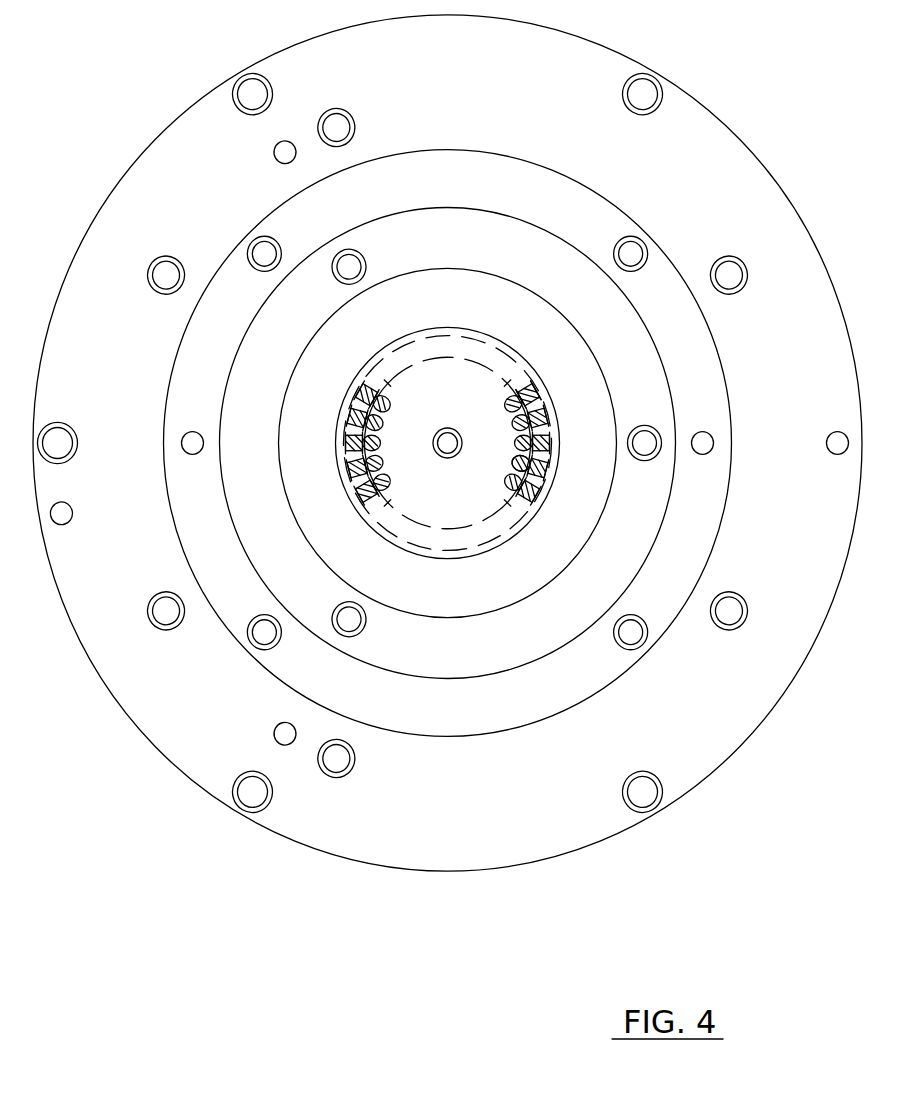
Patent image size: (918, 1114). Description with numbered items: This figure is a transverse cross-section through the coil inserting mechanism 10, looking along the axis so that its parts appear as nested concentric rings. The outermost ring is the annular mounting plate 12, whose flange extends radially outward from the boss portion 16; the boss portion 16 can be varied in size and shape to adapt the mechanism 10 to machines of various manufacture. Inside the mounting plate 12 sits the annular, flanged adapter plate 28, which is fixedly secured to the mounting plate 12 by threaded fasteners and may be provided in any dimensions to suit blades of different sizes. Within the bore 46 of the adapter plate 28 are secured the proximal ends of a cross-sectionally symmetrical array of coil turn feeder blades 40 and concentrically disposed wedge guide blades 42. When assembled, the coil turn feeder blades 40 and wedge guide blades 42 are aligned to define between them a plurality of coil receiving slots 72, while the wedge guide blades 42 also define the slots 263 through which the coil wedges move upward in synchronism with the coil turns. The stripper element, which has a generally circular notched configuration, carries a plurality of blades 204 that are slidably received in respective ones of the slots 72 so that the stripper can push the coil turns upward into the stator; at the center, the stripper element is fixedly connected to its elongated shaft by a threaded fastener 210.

The mechanism 10 is at (350, 960).
The annular mounting plate 12 is at (509, 850).
The boss portion 16 is at (573, 852).
The adapter plate 28 is at (710, 372).
The coil turn feeder blades 40 is at (505, 384).
The wedge guide blades 42 is at (534, 392).
The bore 46 is at (522, 370).
The coil receiving slots 72 is at (540, 453).
The blades 204 is at (533, 421).
The threaded fastener 210 is at (447, 430).
The slots 263 is at (537, 402).